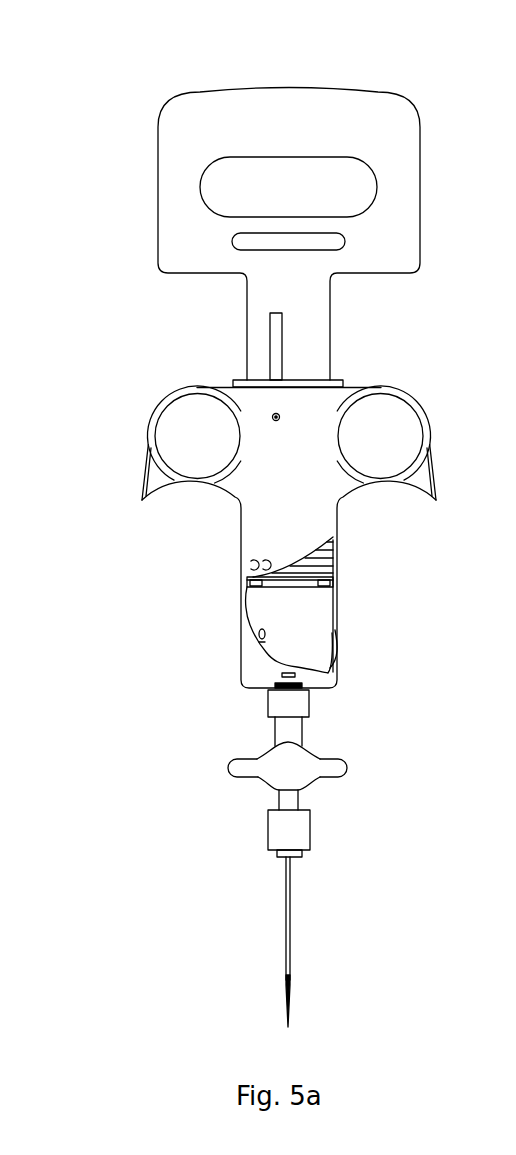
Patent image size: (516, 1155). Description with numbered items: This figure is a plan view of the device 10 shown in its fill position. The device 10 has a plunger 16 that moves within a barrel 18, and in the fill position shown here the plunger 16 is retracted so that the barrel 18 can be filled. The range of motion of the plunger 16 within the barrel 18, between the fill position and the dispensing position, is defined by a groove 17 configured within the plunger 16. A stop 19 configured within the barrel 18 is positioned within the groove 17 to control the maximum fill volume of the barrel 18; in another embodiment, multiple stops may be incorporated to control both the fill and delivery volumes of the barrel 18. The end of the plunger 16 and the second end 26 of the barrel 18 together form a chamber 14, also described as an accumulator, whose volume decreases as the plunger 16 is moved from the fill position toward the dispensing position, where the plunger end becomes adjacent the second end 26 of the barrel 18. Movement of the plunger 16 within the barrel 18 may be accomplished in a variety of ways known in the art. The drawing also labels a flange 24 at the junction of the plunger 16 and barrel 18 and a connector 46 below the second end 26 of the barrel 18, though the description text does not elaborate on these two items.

The device 10 is at (142, 89).
The plunger 16 is at (322, 327).
The groove 17 is at (275, 342).
The flange 24 is at (343, 383).
The barrel 18 is at (323, 522).
The stop 19 is at (280, 420).
The chamber 14 is at (308, 620).
The second end of the barrel 26 is at (336, 677).
The luer connector 46 is at (309, 705).